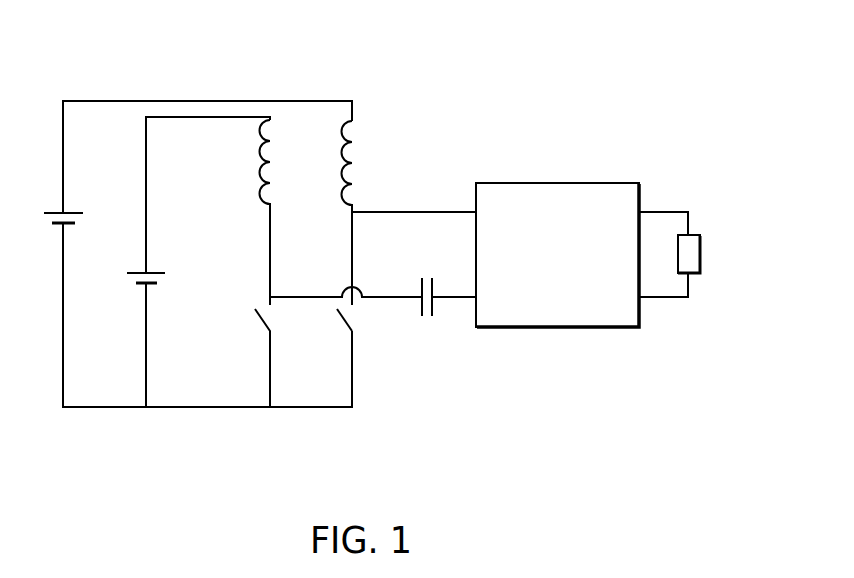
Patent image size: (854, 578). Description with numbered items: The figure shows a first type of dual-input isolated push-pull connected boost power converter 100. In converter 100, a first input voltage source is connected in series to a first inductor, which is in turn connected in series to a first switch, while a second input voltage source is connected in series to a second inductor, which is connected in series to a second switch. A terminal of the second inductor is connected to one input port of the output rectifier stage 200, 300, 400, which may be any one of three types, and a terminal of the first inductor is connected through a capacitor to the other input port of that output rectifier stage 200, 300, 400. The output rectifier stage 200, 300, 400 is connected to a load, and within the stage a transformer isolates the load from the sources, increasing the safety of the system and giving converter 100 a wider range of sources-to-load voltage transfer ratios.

The dual-input isolated push-pull connected boost power converter 100 is at (575, 88).
The output rectifier stage 200 is at (611, 227).
The output rectifier stage 300 is at (611, 227).
The output rectifier stage 400 is at (604, 183).